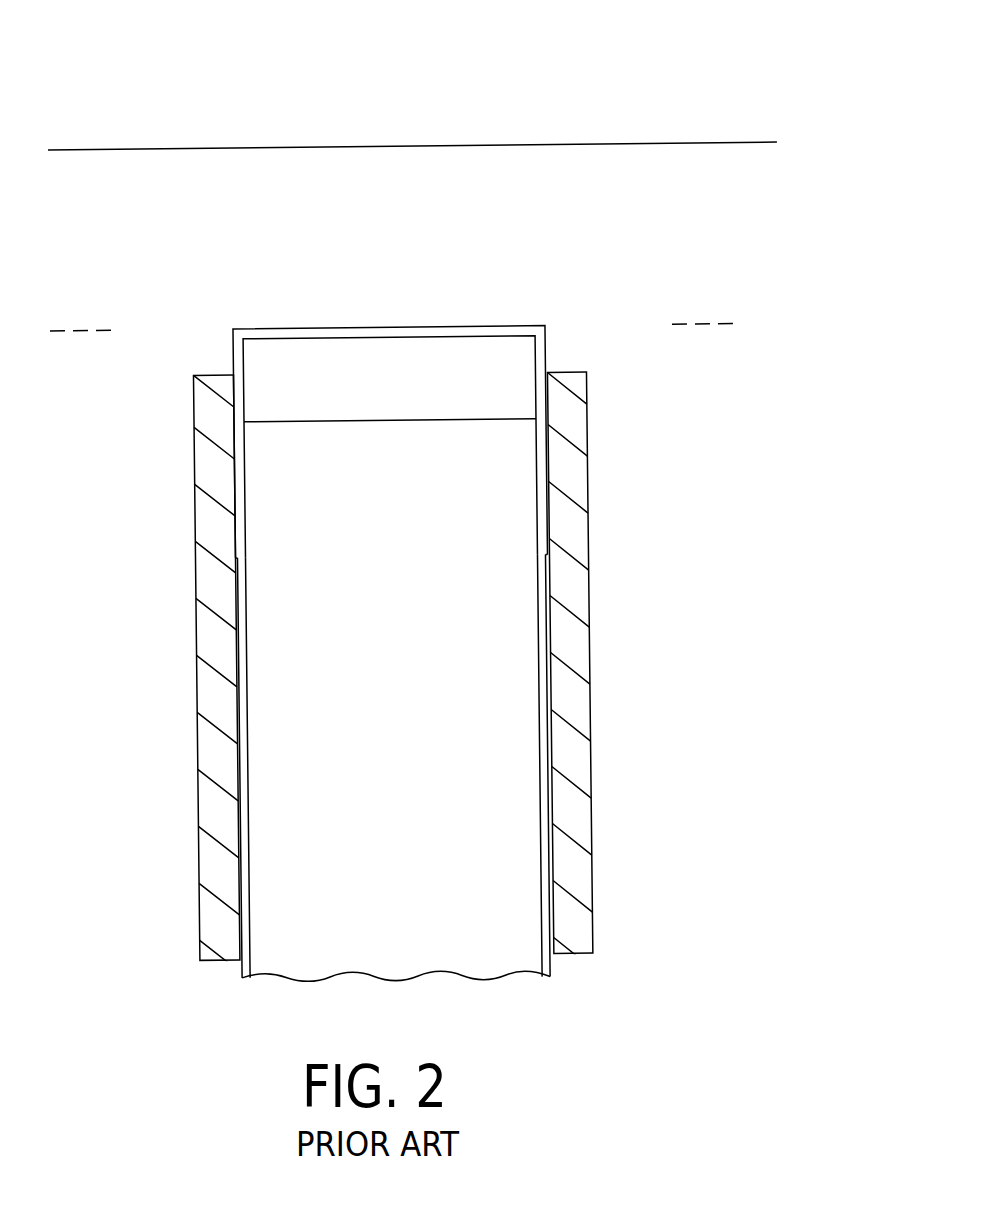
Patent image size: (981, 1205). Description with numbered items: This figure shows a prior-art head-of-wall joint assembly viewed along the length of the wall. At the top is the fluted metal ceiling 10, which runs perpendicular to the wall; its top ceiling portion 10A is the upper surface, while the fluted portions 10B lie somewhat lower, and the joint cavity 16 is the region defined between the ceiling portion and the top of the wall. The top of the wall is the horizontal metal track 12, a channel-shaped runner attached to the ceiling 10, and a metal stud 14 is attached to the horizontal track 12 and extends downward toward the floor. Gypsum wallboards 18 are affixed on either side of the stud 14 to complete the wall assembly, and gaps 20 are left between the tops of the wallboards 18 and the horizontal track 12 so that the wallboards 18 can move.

The fluted metal ceiling 10 is at (341, 118).
The top ceiling portion 10A is at (505, 150).
The fluted portions 10B is at (84, 332).
The horizontal metal track 12 is at (535, 365).
The metal studs 14 is at (387, 964).
The joint cavity 16 is at (439, 248).
The gypsum wallboards 18 is at (210, 827).
The gaps 20 is at (185, 332).